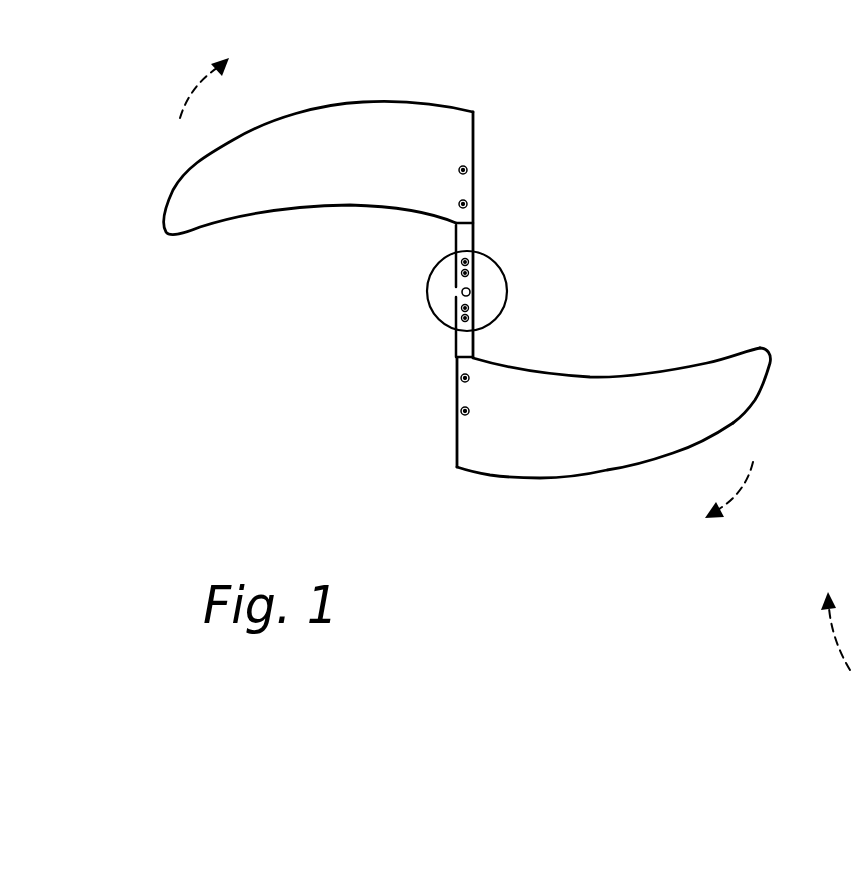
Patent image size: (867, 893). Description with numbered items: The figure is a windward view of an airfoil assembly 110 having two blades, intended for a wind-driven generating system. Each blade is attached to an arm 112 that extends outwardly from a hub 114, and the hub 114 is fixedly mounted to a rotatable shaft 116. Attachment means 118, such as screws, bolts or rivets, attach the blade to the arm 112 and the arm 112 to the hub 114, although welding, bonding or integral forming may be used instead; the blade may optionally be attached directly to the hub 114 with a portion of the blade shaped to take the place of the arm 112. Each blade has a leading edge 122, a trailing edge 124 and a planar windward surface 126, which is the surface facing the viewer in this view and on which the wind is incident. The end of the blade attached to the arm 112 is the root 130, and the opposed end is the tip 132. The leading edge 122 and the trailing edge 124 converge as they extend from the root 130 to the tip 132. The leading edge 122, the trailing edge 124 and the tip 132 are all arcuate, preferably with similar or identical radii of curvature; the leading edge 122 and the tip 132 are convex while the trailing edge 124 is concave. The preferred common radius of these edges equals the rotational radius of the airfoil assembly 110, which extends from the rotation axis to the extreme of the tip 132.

The airfoil assembly 110 is at (614, 188).
The arm 112 is at (477, 237).
The hub 114 is at (497, 287).
The rotatable shaft 116 is at (457, 284).
The attachment means 118 is at (475, 307).
The leading edge 122 is at (583, 472).
The trailing edge 124 is at (635, 375).
The planar windward surface 126 is at (672, 407).
The root 130 is at (453, 435).
The tip 132 is at (750, 373).